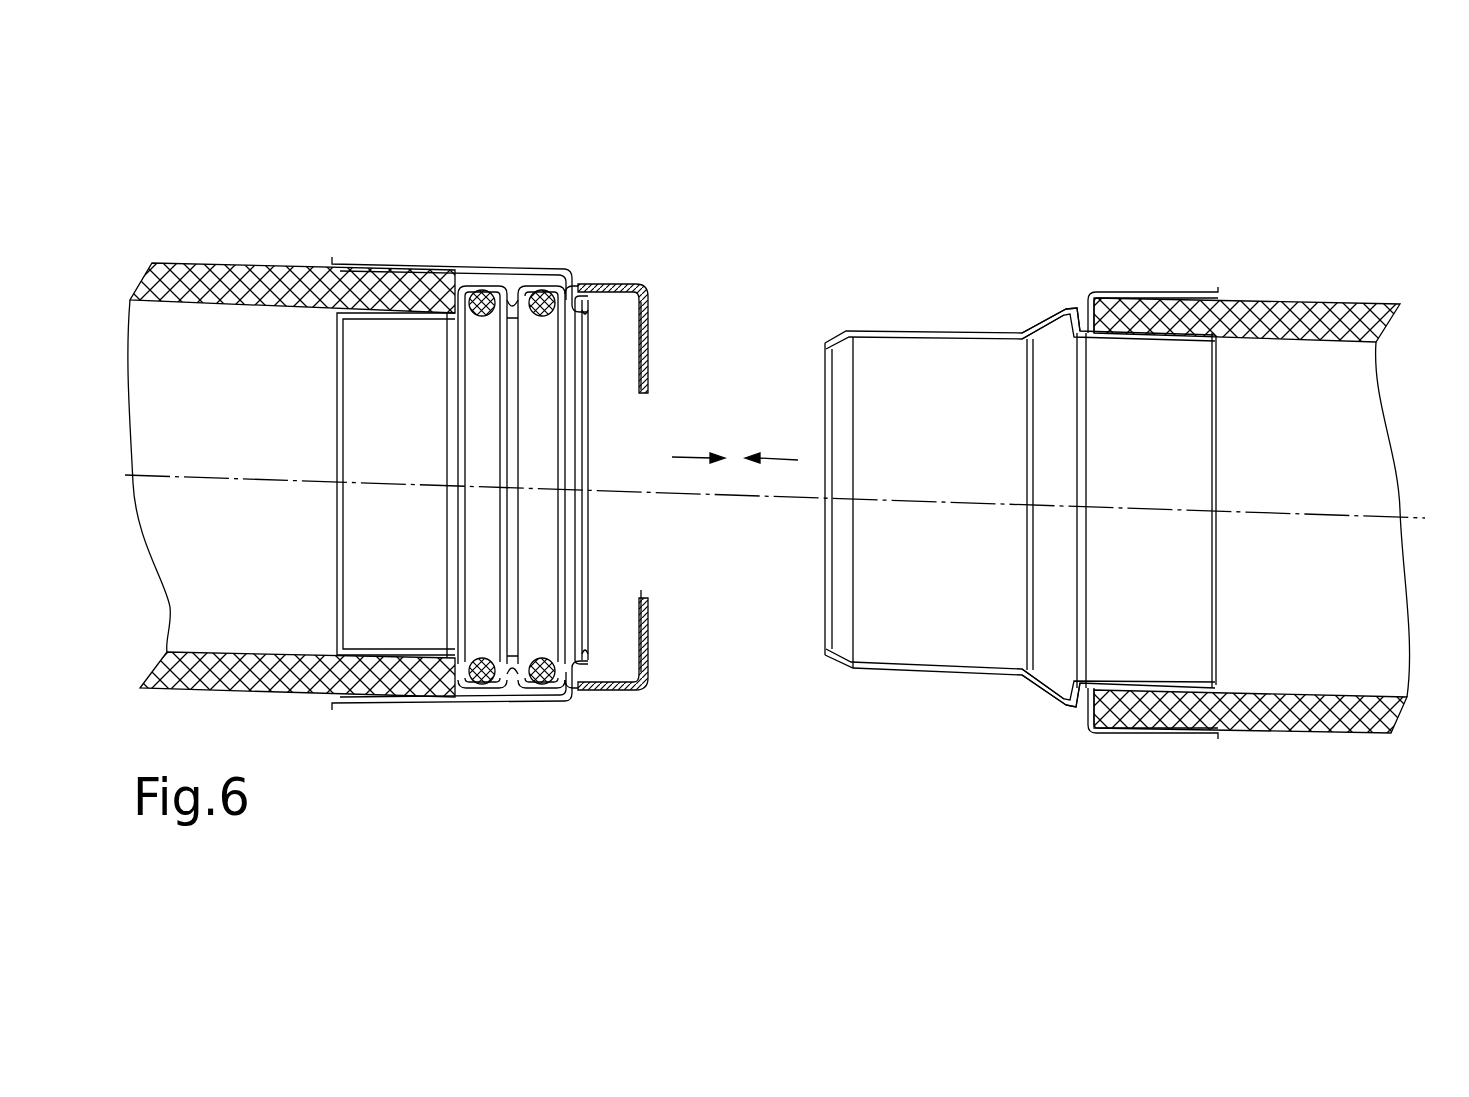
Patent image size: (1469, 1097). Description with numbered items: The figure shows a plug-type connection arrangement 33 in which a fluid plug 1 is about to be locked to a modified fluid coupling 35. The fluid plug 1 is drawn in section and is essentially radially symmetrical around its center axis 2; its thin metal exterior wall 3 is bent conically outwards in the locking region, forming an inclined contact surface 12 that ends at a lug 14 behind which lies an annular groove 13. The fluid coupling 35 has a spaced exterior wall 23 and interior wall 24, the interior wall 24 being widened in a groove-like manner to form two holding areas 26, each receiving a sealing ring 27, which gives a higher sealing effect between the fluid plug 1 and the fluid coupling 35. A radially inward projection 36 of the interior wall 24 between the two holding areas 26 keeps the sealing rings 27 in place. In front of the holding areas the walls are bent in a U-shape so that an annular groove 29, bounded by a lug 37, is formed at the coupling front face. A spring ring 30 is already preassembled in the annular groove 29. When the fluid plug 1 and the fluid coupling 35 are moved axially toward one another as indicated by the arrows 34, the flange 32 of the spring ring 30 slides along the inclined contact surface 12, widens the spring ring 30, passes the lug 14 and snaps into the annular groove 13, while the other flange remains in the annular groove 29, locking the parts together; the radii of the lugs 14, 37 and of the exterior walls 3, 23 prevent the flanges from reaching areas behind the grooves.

The fluid plug 1 is at (1020, 446).
The center axis 2 is at (1269, 473).
The exterior wall 3 is at (1148, 292).
The inclined contact surface 12 is at (1048, 315).
The annular groove 13 is at (1085, 302).
The lug 14 is at (1067, 306).
The exterior wall 23 is at (362, 265).
The interior wall 24 is at (383, 320).
The holding area 26 is at (462, 285).
The sealing ring 27 is at (490, 283).
The annular groove 29 is at (573, 328).
The spring ring 30 is at (642, 457).
The flange 32 is at (650, 297).
The plug-type connection arrangement 33 is at (742, 178).
The arrows 34 is at (693, 457).
The fluid coupling 35 is at (530, 426).
The projection 36 is at (512, 317).
The lug 37 is at (593, 282).